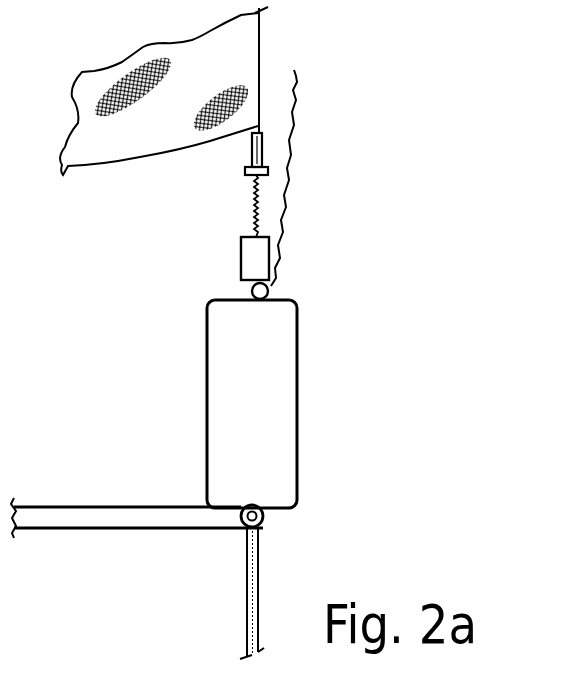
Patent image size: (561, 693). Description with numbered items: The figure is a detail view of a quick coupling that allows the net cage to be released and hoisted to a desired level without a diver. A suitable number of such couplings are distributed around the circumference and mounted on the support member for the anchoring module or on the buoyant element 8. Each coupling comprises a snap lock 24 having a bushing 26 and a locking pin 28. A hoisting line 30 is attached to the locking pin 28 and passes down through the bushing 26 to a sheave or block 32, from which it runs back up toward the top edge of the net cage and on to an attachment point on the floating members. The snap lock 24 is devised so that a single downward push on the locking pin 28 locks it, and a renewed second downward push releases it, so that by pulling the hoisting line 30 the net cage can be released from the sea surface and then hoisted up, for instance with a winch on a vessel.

The buoyant element 8 is at (265, 370).
The snap lock 24 is at (285, 207).
The bushing 26 is at (259, 255).
The locking pin 28 is at (263, 147).
The hoisting line 30 is at (297, 90).
The sheave or block 32 is at (269, 289).